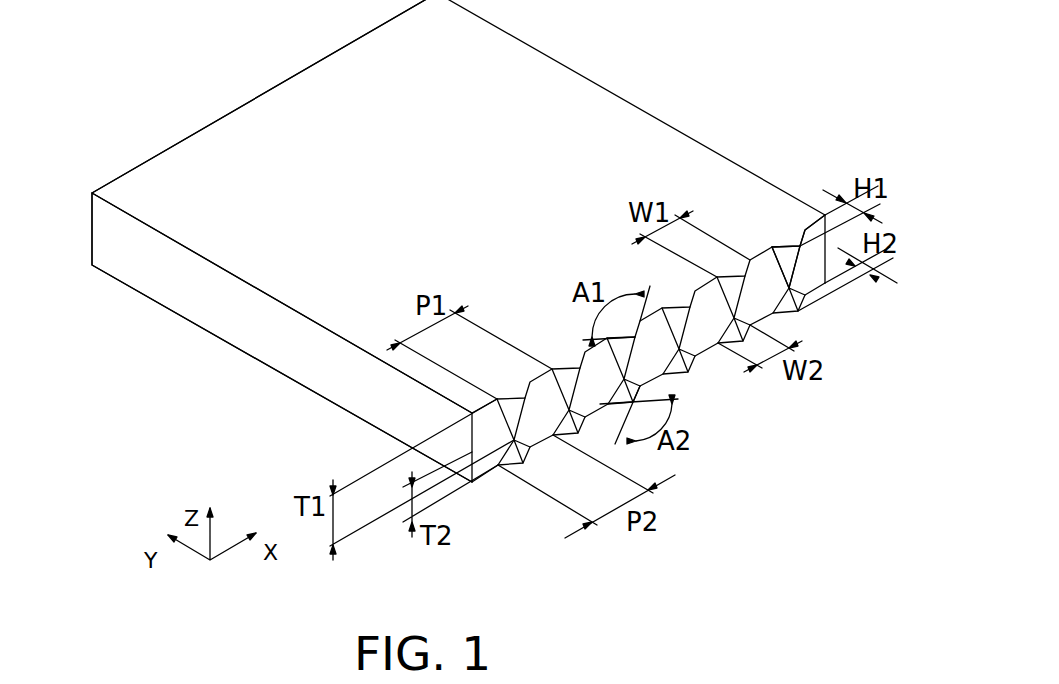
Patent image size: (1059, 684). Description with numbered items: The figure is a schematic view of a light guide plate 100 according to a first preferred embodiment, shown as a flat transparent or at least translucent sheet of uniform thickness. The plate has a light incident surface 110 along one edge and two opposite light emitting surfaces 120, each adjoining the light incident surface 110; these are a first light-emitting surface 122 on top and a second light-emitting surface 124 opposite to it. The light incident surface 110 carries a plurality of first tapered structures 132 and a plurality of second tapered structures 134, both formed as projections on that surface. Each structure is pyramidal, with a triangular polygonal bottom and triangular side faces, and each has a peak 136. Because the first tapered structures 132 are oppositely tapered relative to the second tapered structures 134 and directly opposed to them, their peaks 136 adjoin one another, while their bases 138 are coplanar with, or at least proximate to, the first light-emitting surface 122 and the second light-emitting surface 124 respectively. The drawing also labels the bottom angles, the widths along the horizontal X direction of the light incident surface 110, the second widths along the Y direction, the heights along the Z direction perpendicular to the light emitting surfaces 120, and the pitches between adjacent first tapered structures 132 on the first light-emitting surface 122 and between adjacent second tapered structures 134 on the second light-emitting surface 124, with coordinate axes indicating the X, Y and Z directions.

The light guide plate 100 is at (294, 35).
The light incident surface 110 is at (758, 292).
The light emitting surfaces 120 is at (129, 440).
The first light-emitting surface 122 is at (212, 217).
The second light-emitting surface 124 is at (203, 328).
The first tapered structures 132 is at (683, 355).
The second tapered structures 134 is at (680, 376).
The peak 136 is at (789, 288).
The bases 138 is at (790, 238).